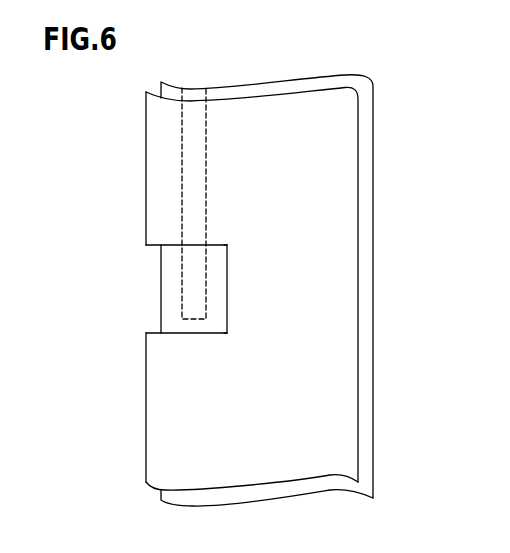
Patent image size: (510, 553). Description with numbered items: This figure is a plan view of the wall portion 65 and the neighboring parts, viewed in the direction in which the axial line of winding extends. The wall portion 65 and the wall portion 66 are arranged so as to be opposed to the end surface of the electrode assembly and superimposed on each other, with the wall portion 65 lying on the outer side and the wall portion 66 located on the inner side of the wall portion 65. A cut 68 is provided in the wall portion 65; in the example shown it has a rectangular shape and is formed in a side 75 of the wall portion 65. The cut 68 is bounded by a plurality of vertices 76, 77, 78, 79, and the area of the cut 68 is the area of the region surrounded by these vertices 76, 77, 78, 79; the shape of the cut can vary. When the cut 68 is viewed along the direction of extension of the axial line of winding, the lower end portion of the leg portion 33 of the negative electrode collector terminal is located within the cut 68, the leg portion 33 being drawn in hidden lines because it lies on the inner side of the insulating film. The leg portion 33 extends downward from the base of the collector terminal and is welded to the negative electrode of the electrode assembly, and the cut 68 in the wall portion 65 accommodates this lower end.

The leg portion 33 is at (182, 268).
The wall portion 65 is at (347, 172).
The wall portion 66 is at (365, 98).
The cut 68 is at (227, 295).
The side 75 is at (146, 442).
The vertex 76 is at (146, 245).
The vertex 77 is at (146, 334).
The vertex 78 is at (227, 335).
The vertex 79 is at (227, 245).